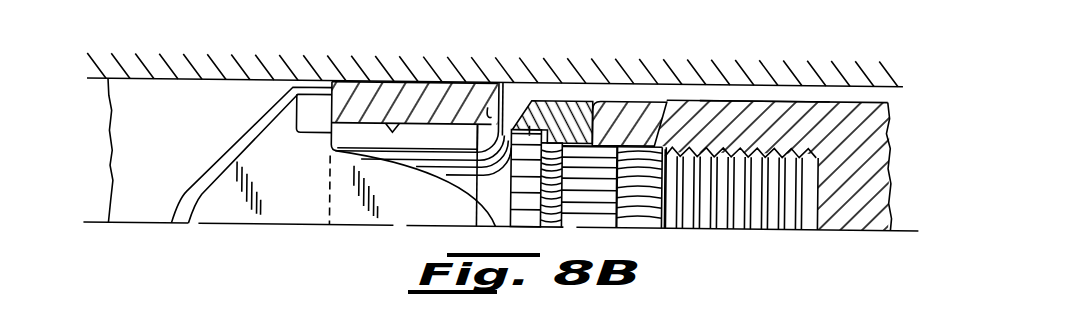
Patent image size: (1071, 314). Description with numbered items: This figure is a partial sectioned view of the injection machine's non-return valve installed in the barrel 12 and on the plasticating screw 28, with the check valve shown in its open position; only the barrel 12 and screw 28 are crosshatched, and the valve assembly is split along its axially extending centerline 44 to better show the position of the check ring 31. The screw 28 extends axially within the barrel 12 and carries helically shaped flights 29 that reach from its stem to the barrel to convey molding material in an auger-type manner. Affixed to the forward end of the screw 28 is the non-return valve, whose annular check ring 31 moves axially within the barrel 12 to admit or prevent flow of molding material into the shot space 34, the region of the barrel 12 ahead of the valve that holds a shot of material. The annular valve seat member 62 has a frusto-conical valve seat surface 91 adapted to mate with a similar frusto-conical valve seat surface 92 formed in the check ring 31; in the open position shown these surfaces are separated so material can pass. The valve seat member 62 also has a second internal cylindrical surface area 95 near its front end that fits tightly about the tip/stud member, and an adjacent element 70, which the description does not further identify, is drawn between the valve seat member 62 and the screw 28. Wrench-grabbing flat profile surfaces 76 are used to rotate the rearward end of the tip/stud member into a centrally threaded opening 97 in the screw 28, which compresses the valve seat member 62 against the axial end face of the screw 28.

The barrel 12 is at (157, 65).
The plasticating screw 28 is at (762, 92).
The flights 29 is at (825, 92).
The check ring 31 is at (393, 128).
The shot space 34 is at (142, 137).
The centerline 44 is at (920, 222).
The annular valve seat member 62 is at (573, 126).
The spring 70 is at (627, 136).
The flat profile surface 76 is at (284, 184).
The frusto-conical valve seat surface 91 is at (503, 125).
The frusto-conical valve seat surface 92 is at (491, 100).
The second internal cylindrical surface area 95 is at (516, 126).
The threaded opening 97 is at (655, 135).